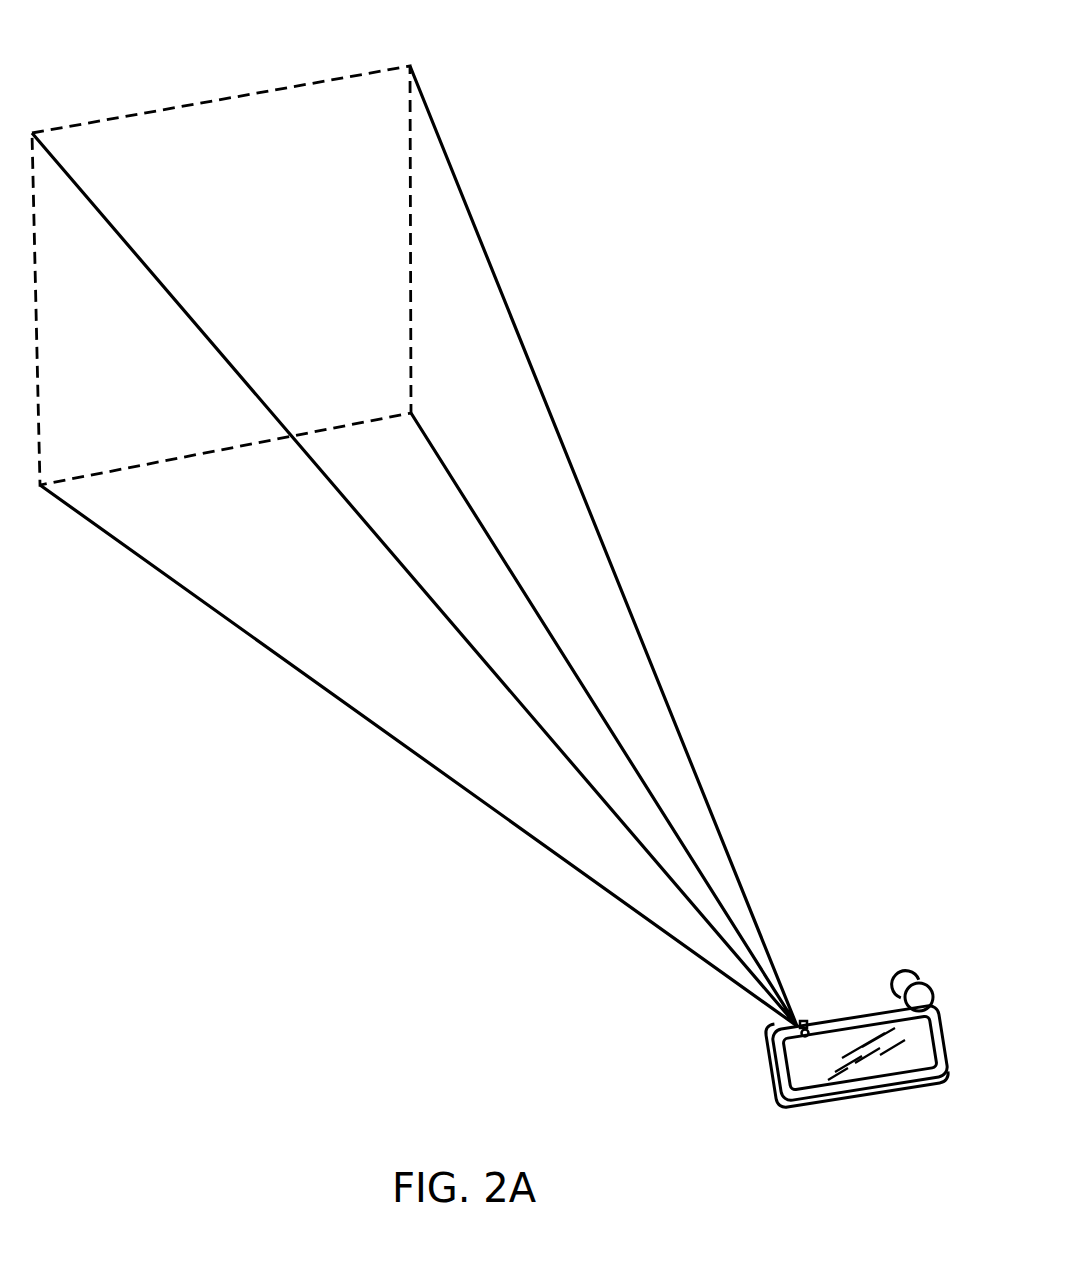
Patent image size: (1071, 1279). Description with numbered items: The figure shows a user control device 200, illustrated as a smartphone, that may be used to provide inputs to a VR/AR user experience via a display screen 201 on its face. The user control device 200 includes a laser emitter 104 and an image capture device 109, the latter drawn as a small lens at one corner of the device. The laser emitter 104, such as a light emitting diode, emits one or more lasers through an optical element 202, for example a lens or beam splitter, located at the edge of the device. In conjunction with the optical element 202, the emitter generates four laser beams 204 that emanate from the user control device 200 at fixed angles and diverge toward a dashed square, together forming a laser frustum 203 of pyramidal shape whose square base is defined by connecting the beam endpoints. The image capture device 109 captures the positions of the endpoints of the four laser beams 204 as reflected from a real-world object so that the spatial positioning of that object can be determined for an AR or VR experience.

The user control device 200 is at (812, 1053).
The laser emitter 104 is at (783, 1062).
The display screen 201 is at (905, 1068).
The image capture device 109 is at (918, 982).
The optical element 202 is at (797, 1025).
The laser frustum 203 is at (222, 97).
The laser beams 204 is at (540, 378).